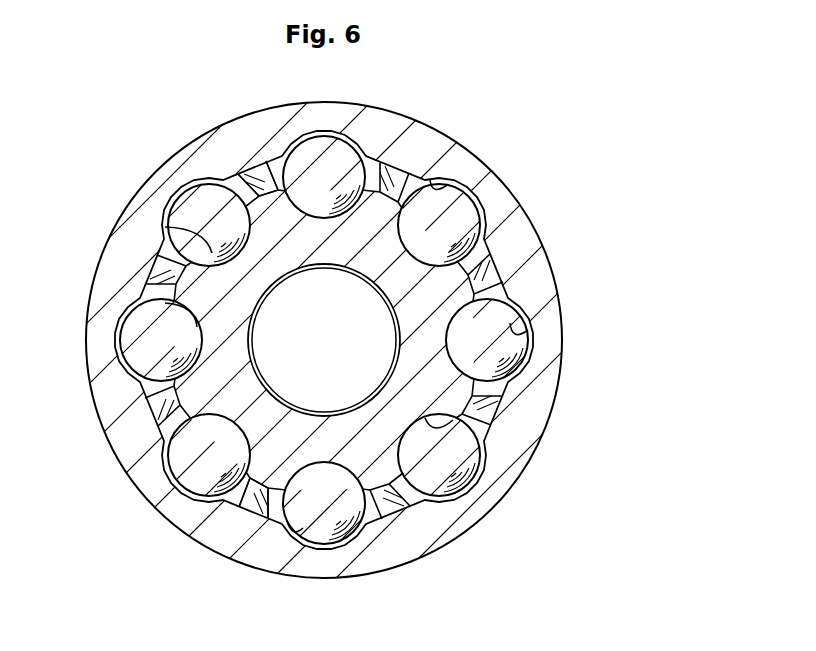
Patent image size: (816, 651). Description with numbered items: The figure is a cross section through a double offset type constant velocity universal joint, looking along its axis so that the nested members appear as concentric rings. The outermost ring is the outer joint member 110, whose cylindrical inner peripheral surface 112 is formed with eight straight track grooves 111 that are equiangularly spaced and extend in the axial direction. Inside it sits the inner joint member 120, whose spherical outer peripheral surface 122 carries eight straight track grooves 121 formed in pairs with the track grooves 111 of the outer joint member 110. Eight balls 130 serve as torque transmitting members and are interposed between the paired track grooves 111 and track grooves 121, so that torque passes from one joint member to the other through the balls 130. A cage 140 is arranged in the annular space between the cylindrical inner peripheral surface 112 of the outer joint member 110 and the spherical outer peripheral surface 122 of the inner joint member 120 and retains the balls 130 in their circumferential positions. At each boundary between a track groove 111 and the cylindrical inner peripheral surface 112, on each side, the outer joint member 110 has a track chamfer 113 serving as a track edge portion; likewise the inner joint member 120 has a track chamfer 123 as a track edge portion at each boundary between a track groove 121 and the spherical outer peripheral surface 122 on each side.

The outer joint member 110 is at (494, 162).
The track grooves 111 is at (527, 337).
The cylindrical inner peripheral surface 112 is at (243, 505).
The track chamfer 113 is at (440, 185).
The inner joint member 120 is at (398, 488).
The track grooves 121 is at (165, 227).
The spherical outer peripheral surface 122 is at (237, 183).
The track chamfer 123 is at (230, 328).
The balls 130 is at (484, 212).
The cage 140 is at (365, 158).